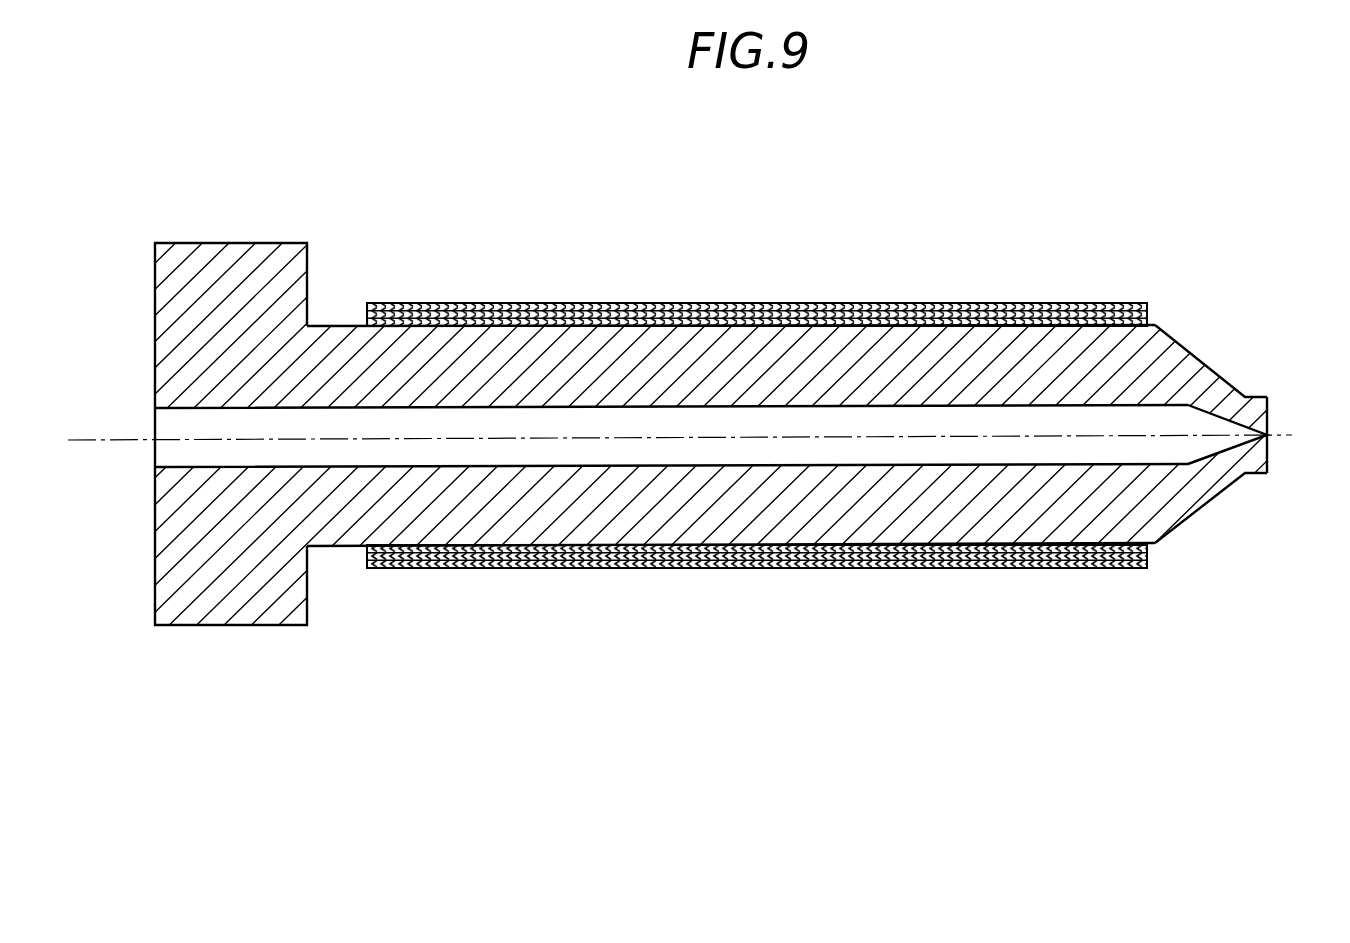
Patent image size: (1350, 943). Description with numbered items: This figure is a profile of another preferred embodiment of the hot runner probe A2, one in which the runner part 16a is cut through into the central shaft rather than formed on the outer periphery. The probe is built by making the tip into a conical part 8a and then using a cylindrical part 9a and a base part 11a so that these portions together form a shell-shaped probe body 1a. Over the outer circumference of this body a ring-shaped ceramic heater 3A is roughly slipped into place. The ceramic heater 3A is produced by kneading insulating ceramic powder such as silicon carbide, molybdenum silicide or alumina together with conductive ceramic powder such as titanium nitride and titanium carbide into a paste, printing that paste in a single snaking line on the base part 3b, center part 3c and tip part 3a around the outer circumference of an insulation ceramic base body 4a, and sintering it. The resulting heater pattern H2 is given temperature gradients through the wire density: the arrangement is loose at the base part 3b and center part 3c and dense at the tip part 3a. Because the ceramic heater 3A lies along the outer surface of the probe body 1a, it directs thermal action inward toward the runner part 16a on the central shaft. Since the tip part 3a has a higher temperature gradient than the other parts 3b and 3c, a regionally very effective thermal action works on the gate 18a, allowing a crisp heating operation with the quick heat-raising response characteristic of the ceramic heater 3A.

The probe body 1a is at (675, 413).
The base part 11a is at (228, 272).
The runner part 16a is at (952, 455).
The gate 18a is at (1267, 436).
The conical part 8a is at (1197, 510).
The hot runner probe A2 is at (1202, 367).
The ceramic heater 3A is at (757, 385).
The tip part 3a is at (1093, 303).
The base part 3b is at (402, 303).
The center part 3c is at (617, 303).
The insulation ceramic base body 4a is at (520, 303).
The cylindrical part 9a is at (715, 303).
The heater pattern H2 is at (926, 303).